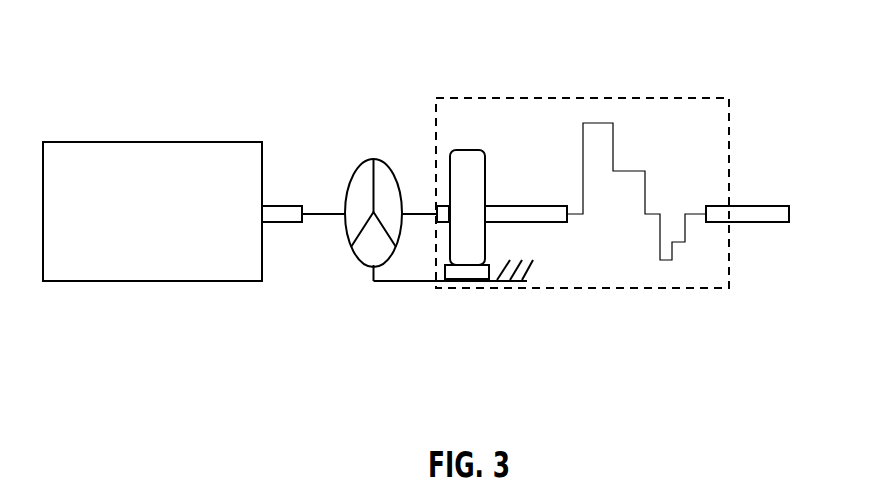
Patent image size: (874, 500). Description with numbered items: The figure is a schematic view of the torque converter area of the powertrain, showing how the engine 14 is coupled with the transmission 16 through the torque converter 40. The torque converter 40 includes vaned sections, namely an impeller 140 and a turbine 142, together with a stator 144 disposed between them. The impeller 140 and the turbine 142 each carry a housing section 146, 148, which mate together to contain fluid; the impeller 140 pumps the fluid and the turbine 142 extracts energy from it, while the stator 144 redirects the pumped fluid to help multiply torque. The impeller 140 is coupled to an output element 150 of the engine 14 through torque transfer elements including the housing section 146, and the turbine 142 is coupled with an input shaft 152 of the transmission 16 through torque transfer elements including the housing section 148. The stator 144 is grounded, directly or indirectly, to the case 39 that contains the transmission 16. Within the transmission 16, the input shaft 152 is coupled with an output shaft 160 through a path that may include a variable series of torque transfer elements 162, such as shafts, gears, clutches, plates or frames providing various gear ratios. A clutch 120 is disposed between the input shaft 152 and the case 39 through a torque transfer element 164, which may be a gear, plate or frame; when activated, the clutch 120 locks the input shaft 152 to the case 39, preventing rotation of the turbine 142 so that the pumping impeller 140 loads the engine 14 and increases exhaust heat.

The engine 14 is at (160, 227).
The transmission 16 is at (545, 98).
The case 39 is at (520, 283).
The torque converter 40 is at (340, 290).
The clutch 120 is at (467, 279).
The impeller 140 is at (357, 212).
The turbine 142 is at (385, 185).
The stator 144 is at (367, 258).
The housing section 146 is at (358, 167).
The housing section 148 is at (398, 243).
The output element 150 is at (290, 206).
The input shaft 152 is at (440, 206).
The output shaft 160 is at (758, 223).
The torque transfer elements 162 is at (665, 260).
The torque transfer element 164 is at (475, 187).